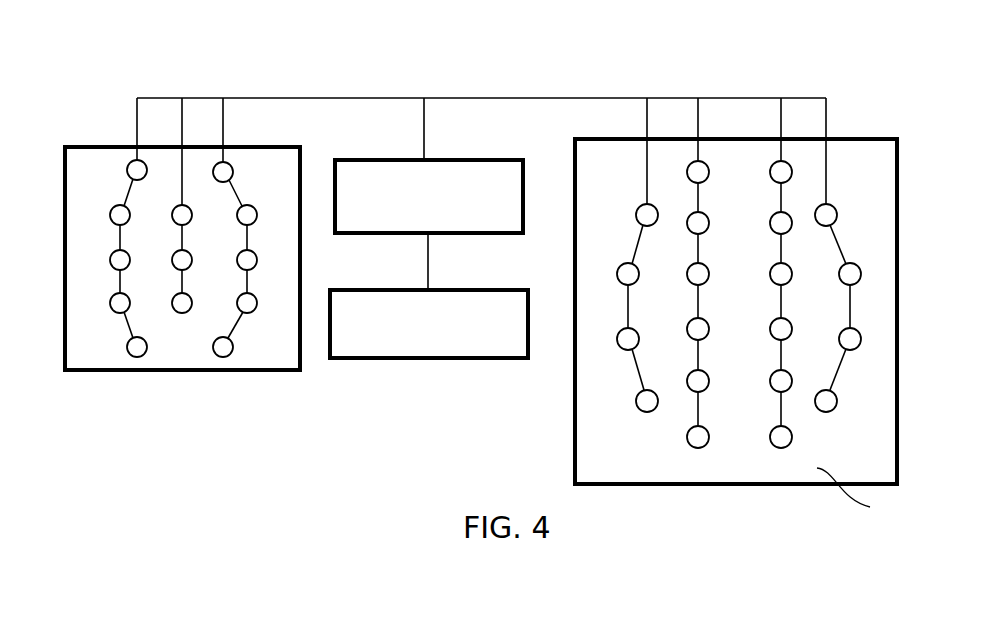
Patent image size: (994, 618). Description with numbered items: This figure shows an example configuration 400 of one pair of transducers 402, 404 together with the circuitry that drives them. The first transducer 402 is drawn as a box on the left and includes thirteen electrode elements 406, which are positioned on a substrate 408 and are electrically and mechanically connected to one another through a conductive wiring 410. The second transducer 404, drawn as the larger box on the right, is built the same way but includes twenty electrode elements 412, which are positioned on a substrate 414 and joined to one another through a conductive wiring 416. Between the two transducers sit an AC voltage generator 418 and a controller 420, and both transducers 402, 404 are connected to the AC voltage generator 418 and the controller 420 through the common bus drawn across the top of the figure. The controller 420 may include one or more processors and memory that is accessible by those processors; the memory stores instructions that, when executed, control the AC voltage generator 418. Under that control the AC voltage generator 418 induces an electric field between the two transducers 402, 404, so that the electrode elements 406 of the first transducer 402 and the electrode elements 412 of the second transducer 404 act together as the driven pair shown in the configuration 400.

The electrode system 400 is at (210, 68).
The first transducer 402 is at (255, 146).
The second transducer 404 is at (575, 428).
The electrode elements 406 is at (127, 165).
The substrate 408 is at (263, 360).
The conductive wiring 410 is at (127, 338).
The electrode elements 412 is at (698, 448).
The substrate 414 is at (867, 496).
The conductive wiring 416 is at (837, 370).
The AC voltage generator 418 is at (465, 160).
The controller 420 is at (460, 290).